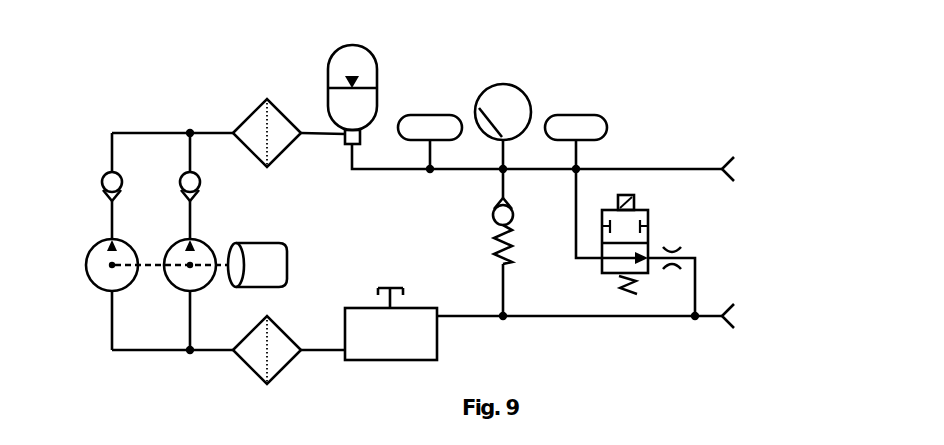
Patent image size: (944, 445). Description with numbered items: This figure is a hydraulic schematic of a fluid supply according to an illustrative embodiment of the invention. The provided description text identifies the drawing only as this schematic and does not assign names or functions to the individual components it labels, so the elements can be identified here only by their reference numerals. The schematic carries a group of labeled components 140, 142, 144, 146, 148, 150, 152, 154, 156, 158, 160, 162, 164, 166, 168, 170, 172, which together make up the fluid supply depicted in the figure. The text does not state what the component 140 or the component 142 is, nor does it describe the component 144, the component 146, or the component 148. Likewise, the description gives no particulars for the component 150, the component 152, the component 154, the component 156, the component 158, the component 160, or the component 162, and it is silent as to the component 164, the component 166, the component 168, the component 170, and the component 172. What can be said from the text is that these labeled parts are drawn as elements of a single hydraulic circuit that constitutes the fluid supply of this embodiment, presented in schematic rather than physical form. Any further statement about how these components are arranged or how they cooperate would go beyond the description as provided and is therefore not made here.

The first pump 140 is at (104, 289).
The second pump 142 is at (183, 289).
The motor 144 is at (262, 242).
The check valve 146 is at (104, 174).
The check valve 148 is at (182, 174).
The suction filter 150 is at (255, 370).
The reservoir 152 is at (350, 307).
The pressure filter 154 is at (262, 103).
The accumulator 156 is at (331, 62).
The pressure switch 158 is at (440, 113).
The pressure gauge 160 is at (496, 84).
The pressure transducer 162 is at (591, 113).
The relief valve 164 is at (492, 215).
The solenoid valve 166 is at (604, 274).
The orifice 168 is at (673, 248).
The pressure port 170 is at (722, 162).
The return port 172 is at (722, 323).